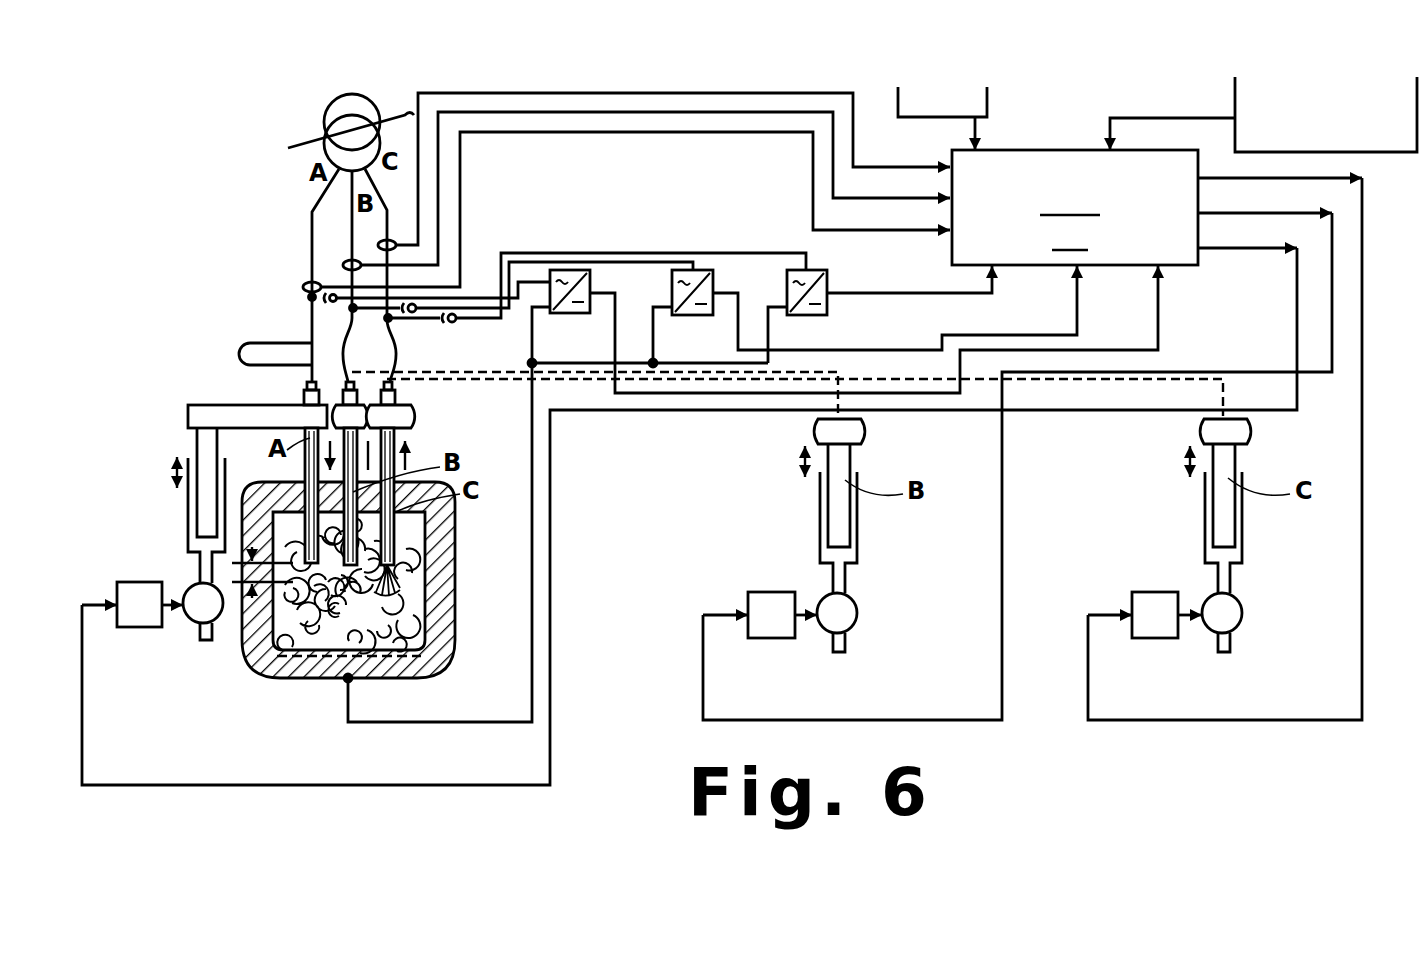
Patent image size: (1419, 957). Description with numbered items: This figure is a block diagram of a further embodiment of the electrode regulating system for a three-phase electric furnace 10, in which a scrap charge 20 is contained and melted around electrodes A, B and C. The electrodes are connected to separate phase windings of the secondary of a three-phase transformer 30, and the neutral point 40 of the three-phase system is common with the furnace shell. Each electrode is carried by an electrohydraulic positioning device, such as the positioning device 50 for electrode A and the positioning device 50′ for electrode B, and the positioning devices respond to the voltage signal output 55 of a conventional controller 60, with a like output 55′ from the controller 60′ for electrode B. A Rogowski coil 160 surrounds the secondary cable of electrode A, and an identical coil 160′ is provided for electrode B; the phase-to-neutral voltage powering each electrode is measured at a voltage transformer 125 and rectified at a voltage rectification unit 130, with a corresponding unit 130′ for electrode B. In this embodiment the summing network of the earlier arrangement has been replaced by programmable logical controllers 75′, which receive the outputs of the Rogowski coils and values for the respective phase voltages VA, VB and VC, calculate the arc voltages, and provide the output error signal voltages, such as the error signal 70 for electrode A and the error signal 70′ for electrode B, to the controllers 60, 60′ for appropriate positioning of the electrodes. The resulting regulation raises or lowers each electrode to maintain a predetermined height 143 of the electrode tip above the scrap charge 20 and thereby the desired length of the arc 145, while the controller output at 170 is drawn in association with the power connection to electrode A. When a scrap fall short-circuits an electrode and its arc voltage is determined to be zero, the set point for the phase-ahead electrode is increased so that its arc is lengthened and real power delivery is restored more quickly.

The three-phase transformer 30 is at (337, 94).
The Rogowski coil 160 is at (304, 286).
The Rogowski coil 160′ is at (591, 191).
The voltage transformer 125 is at (310, 299).
The electrode power conductor 170 is at (308, 342).
The electrode positioning device 50 is at (233, 408).
The electrode positioning device 50′ is at (643, 398).
The three-phase electric furnace 10 is at (261, 478).
The scrap charge 20 is at (382, 615).
The neutral point 40 is at (355, 682).
The predetermined height 143 is at (235, 572).
The arc 145 is at (420, 566).
The voltage signal output 55 is at (177, 610).
The voltage signal output 55′ is at (806, 548).
The controller 60 is at (138, 590).
The controller 60′ is at (760, 590).
The voltage rectification unit 130 is at (562, 314).
The voltage rectification unit 130′ is at (865, 314).
The programmable logical controller 75′ is at (1133, 171).
The error signal voltage 70 is at (1212, 252).
The error signal voltage 70′ is at (1017, 466).